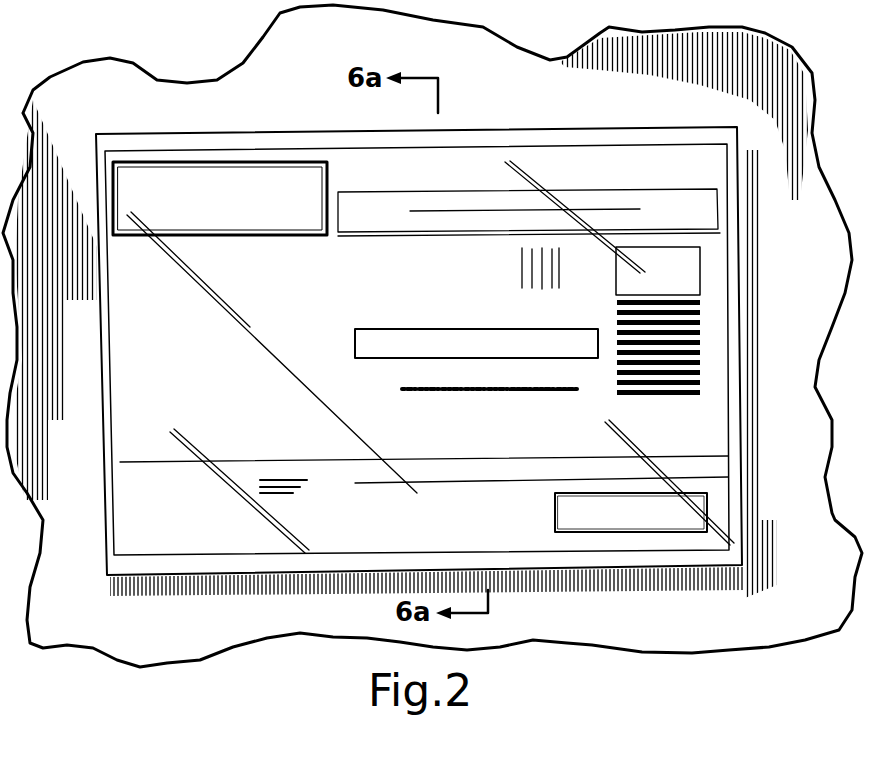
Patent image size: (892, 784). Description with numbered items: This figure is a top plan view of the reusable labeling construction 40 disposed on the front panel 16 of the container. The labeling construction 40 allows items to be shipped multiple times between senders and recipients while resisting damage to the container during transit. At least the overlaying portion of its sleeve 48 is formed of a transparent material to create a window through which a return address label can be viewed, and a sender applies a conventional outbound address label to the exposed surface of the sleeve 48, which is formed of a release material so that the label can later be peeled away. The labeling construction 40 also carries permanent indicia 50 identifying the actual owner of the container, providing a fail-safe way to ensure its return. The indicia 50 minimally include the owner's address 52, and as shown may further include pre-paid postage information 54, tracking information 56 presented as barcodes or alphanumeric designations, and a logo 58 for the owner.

The front panel 16 is at (530, 111).
The reusable labeling construction 40 is at (719, 415).
The sleeve 48 is at (337, 289).
The indicia 50 is at (160, 386).
The address 52 is at (440, 428).
The pre-paid postage information 54 is at (578, 351).
The tracking information 56 is at (661, 200).
The logo 58 is at (178, 482).